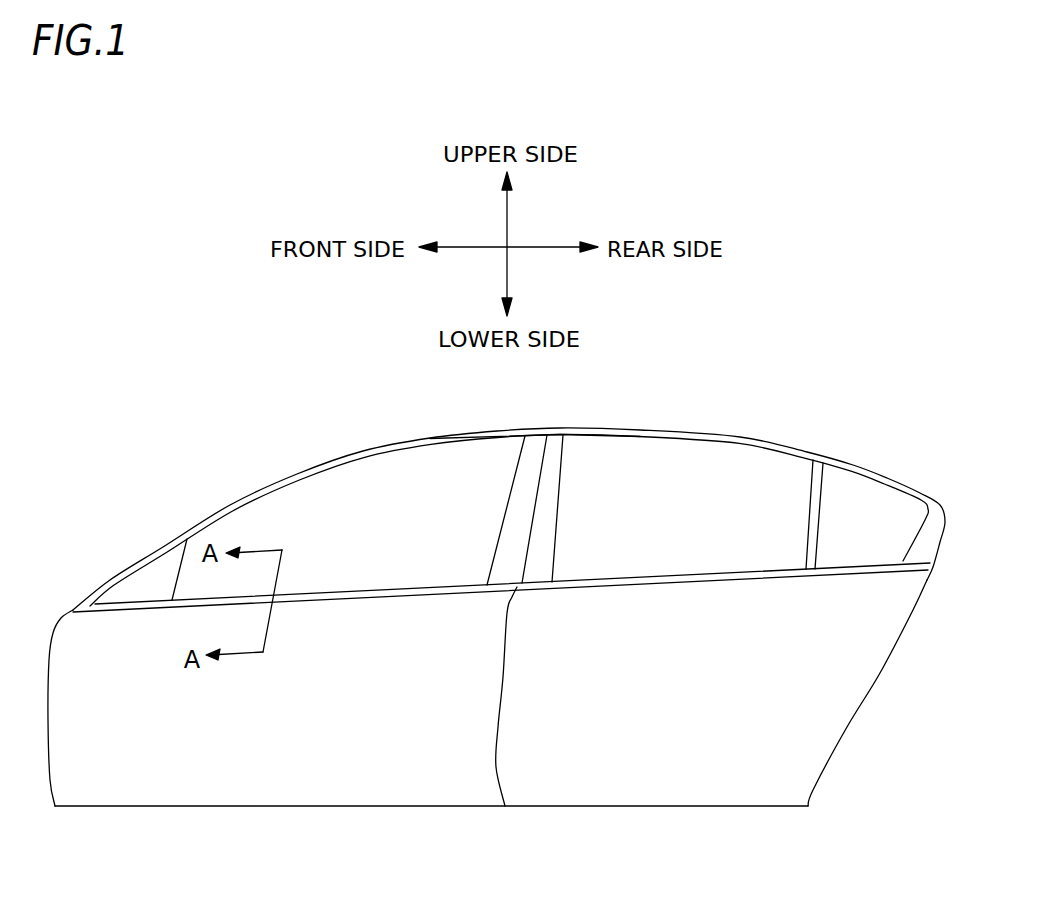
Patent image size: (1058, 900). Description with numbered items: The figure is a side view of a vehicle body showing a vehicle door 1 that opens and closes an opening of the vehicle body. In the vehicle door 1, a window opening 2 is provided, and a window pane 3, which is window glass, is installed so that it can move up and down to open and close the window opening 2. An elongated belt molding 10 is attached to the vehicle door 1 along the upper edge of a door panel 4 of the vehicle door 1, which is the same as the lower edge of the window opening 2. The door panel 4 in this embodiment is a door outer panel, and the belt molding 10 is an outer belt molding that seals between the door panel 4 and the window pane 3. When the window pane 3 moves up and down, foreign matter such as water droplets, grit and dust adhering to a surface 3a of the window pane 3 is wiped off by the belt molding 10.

The vehicle door 1 is at (56, 638).
The window opening 2 is at (249, 517).
The window pane 3 is at (347, 477).
The surface of the window pane 3a is at (463, 452).
The door panel 4 is at (313, 795).
The belt molding 10 is at (383, 591).